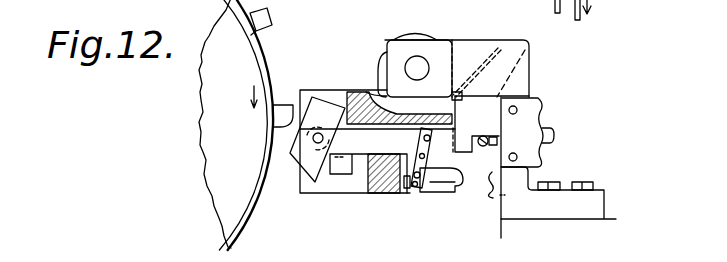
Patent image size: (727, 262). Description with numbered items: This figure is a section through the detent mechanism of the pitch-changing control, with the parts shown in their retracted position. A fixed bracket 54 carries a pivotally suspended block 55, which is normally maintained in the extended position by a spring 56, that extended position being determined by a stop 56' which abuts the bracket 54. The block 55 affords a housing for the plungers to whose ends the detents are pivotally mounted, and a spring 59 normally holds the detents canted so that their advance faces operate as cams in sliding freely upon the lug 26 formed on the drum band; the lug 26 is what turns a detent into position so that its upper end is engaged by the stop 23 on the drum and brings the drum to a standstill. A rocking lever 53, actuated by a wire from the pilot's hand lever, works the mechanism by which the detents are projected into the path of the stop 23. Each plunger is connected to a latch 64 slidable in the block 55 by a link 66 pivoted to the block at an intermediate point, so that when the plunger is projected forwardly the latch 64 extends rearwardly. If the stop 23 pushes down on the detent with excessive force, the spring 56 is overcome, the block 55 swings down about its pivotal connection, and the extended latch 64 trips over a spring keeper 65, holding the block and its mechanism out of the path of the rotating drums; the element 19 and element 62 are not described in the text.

The disc 19 is at (203, 183).
The stop 23 is at (271, 17).
The lug 26 is at (283, 106).
The rocking lever 53 is at (554, 138).
The fixed bracket 54 is at (521, 71).
The block 55 is at (368, 92).
The spring 56 is at (457, 56).
The stop 56' is at (410, 62).
The spring 59 is at (323, 157).
The pawl 62 is at (320, 96).
The latch 64 is at (433, 182).
The spring keeper 65 is at (489, 197).
The link 66 is at (437, 165).